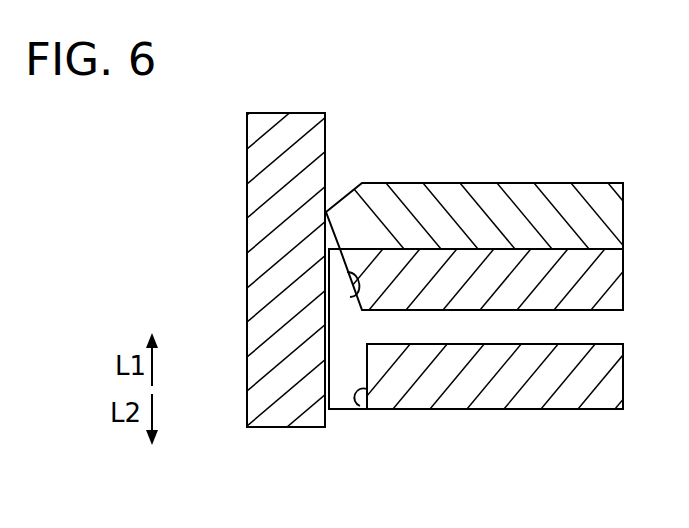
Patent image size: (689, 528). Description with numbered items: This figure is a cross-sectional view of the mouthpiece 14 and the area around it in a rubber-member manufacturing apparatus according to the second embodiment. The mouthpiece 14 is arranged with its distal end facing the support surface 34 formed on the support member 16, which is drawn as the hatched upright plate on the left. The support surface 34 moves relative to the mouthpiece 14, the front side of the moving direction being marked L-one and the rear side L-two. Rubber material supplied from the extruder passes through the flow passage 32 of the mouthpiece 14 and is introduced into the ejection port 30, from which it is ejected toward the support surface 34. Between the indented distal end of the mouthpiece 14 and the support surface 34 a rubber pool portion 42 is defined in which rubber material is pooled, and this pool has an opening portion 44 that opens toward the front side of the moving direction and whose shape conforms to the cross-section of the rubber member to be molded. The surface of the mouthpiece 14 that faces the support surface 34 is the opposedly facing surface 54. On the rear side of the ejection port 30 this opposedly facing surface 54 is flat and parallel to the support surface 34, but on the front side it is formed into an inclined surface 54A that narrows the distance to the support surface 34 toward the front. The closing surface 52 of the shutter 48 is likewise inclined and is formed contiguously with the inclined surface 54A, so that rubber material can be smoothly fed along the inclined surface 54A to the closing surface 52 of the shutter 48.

The mouthpiece 14 is at (546, 409).
The support member 16 is at (256, 165).
The ejection port 30 is at (363, 328).
The flow passage 32 is at (491, 345).
The support surface 34 is at (325, 130).
The rubber pool portion 42 is at (282, 427).
The opening portion 44 is at (330, 265).
The shutter 48 is at (513, 190).
The closing surface 52 is at (331, 233).
The opposedly facing surface 54 is at (360, 406).
The inclined surface 54A is at (355, 278).